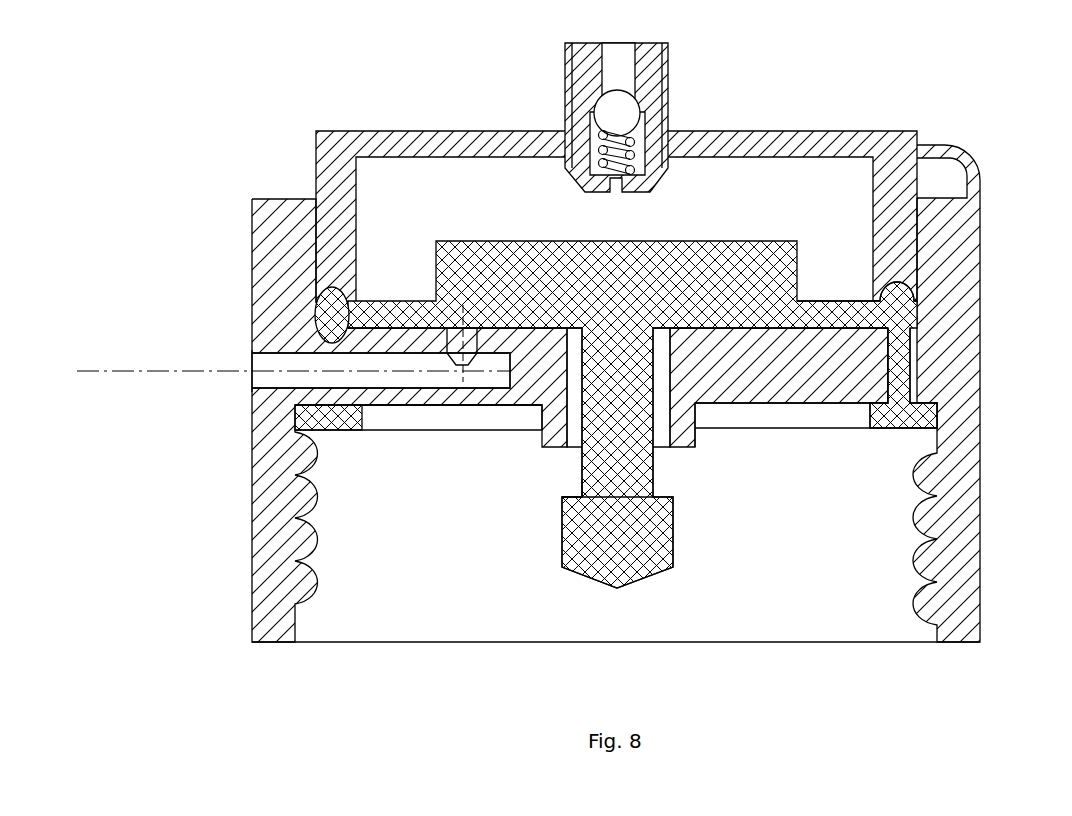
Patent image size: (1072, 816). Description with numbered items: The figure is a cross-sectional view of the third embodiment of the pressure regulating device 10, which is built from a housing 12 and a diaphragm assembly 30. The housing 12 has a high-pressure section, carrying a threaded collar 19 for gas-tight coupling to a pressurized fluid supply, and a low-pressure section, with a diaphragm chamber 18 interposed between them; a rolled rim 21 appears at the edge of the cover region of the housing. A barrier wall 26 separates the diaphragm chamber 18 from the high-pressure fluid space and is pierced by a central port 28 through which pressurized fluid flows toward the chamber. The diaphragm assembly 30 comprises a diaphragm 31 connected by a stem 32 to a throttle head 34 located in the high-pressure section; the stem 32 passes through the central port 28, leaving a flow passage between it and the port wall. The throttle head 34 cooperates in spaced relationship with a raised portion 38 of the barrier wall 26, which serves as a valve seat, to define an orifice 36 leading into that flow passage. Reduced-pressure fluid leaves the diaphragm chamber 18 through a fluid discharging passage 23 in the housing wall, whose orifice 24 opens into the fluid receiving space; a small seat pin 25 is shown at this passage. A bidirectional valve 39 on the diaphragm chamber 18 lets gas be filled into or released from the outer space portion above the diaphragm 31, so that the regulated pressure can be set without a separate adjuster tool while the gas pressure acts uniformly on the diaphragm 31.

The pressure regulating device 10 is at (187, 94).
The housing 12 is at (657, 382).
The diaphragm chamber 18 is at (829, 188).
The threaded collar 19 is at (968, 545).
The rolled rim 21 is at (967, 160).
The fluid discharging passage 23 is at (252, 389).
The orifice 24 is at (272, 382).
The valve seat pin 25 is at (457, 340).
The barrier wall 26 is at (743, 397).
The central port 28 is at (660, 430).
The diaphragm assembly 30 is at (713, 253).
The diaphragm 31 is at (817, 309).
The stem 32 is at (593, 458).
The throttle head 34 is at (635, 568).
The orifice 36 is at (569, 482).
The raised portion 38 is at (550, 430).
The bidirectional valve 39 is at (585, 82).